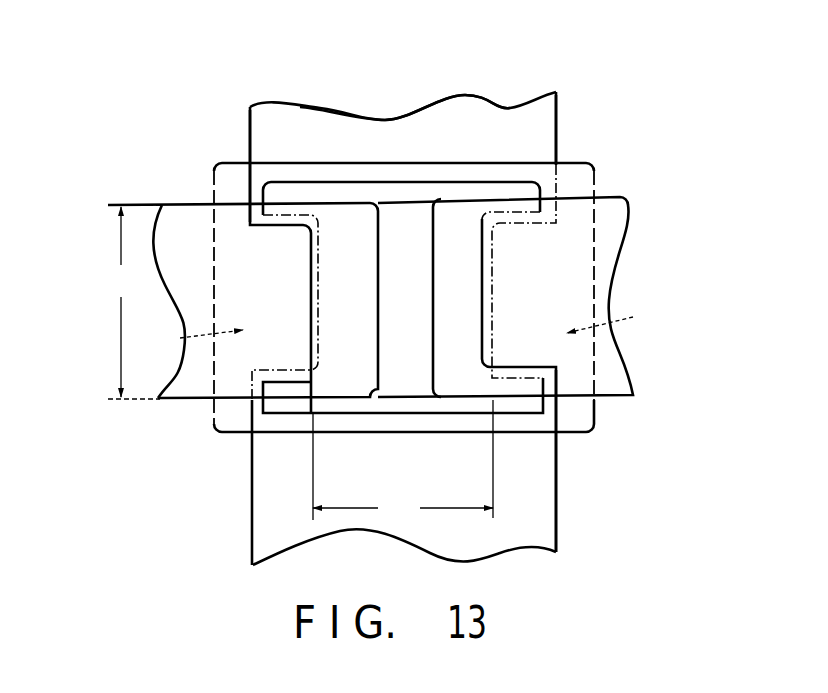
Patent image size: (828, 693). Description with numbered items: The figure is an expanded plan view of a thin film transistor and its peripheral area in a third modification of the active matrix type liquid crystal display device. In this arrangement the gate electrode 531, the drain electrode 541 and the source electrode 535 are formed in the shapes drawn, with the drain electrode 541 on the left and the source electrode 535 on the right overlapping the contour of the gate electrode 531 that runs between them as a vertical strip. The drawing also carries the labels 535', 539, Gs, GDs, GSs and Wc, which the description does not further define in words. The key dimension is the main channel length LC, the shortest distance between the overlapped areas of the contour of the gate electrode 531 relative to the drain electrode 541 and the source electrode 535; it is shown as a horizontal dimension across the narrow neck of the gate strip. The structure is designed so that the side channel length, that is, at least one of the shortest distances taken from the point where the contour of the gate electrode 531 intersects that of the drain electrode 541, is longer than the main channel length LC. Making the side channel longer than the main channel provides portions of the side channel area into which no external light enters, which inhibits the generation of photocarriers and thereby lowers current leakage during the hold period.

The source electrode 535 is at (433, 307).
The gate electrode 531 is at (452, 437).
The drain electrode 541 is at (183, 215).
The source electrode plate 535' is at (530, 268).
The gate lead strip 539 is at (342, 408).
The gate strip Gs is at (438, 115).
The gate-drain strip edge GDs is at (277, 117).
The gate-source strip edge GSs is at (538, 117).
The channel width Wc is at (135, 302).
The main channel length LC is at (403, 461).